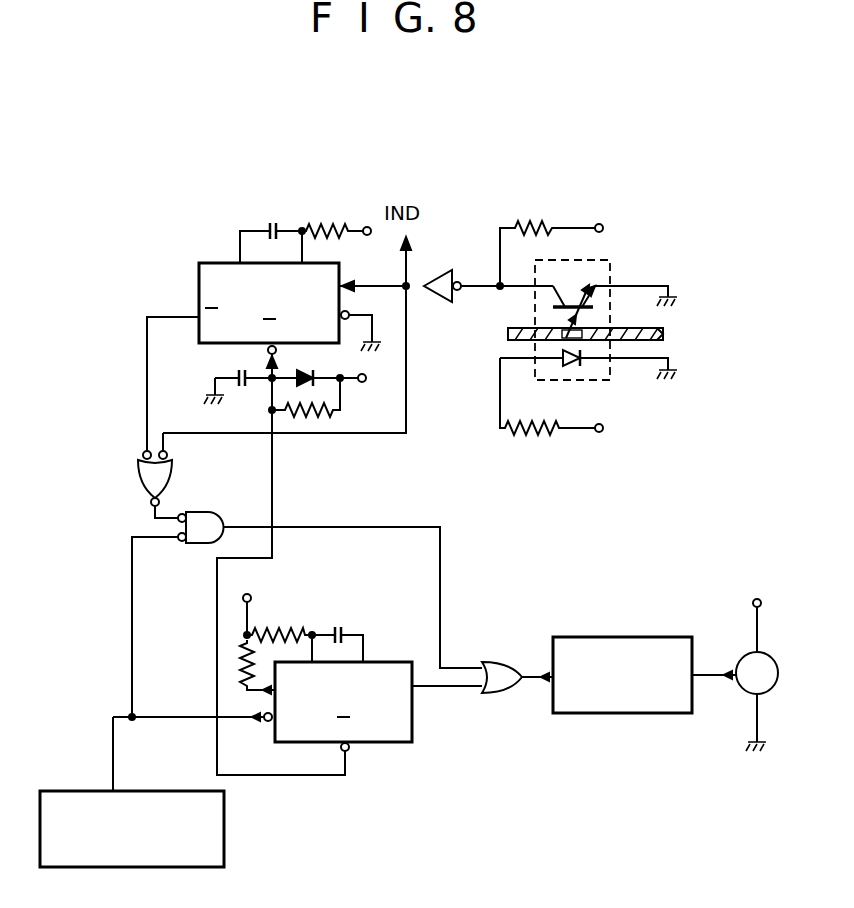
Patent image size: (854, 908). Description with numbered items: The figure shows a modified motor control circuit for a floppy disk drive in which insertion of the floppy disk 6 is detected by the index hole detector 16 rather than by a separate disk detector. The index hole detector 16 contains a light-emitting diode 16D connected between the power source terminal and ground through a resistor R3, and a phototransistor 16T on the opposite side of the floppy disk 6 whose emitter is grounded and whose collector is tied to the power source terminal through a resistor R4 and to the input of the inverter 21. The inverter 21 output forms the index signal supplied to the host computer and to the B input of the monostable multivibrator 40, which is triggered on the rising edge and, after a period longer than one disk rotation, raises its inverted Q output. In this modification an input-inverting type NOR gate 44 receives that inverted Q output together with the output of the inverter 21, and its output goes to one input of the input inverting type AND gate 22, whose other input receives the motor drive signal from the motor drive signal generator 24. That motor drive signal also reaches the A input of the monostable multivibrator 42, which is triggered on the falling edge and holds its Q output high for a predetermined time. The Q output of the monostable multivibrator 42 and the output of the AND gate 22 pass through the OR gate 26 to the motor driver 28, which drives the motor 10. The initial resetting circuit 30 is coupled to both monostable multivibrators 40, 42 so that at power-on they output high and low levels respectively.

The monostable multivibrator 40 is at (199, 283).
The initial resetting circuit 30 is at (268, 389).
The input-inverting type NOR gate 44 is at (172, 470).
The input inverting type AND gate 22 is at (208, 512).
The monostable multivibrator 42 is at (402, 662).
The OR gate 26 is at (492, 662).
The motor driver 28 is at (612, 713).
The motor 10 is at (742, 690).
The motor drive signal generator 24 is at (224, 818).
The inverter 21 is at (440, 305).
The index hole detector 16 is at (535, 320).
The phototransistor 16T is at (567, 285).
The light-emitting diode 16D is at (572, 370).
The floppy disk 6 is at (663, 339).
The resistor R4 is at (538, 226).
The resistor R3 is at (543, 440).